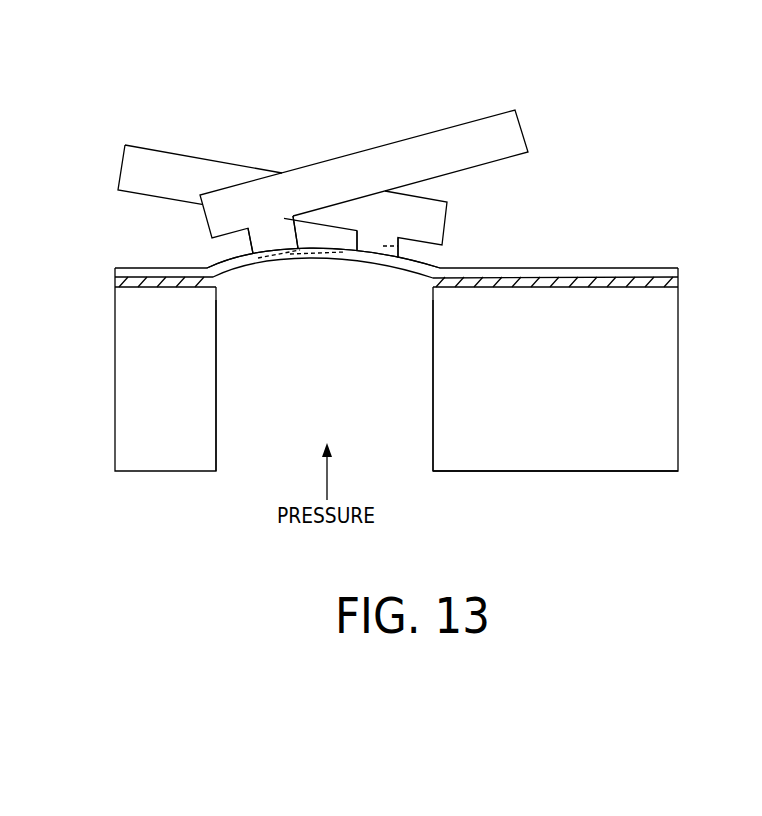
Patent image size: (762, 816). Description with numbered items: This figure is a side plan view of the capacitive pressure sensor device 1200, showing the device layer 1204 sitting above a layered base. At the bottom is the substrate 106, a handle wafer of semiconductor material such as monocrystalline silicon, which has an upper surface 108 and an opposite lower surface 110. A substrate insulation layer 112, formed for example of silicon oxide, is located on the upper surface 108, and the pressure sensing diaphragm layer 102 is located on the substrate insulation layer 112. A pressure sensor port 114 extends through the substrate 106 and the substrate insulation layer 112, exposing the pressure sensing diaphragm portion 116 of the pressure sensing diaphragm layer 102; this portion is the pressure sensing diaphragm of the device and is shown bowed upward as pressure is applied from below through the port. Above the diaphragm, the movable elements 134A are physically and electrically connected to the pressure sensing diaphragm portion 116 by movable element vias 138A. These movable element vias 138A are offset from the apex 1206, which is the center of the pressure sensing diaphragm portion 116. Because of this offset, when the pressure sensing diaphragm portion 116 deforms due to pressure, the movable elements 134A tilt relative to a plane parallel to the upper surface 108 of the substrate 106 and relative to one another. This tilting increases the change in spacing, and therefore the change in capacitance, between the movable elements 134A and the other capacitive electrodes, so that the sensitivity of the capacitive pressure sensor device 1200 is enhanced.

The movable element 134A is at (180, 163).
The movable element via 138A is at (305, 239).
The pressure sensing diaphragm layer 102 is at (687, 270).
The substrate insulation layer 112 is at (686, 283).
The upper surface 108 is at (615, 287).
The substrate 106 is at (570, 401).
The lower surface 110 is at (609, 471).
The pressure sensor port 114 is at (325, 402).
The pressure sensing diaphragm portion 116 is at (289, 272).
The apex 1206 is at (340, 250).
The device layer 1204 is at (553, 188).
The capacitive pressure sensor device 1200 is at (672, 220).